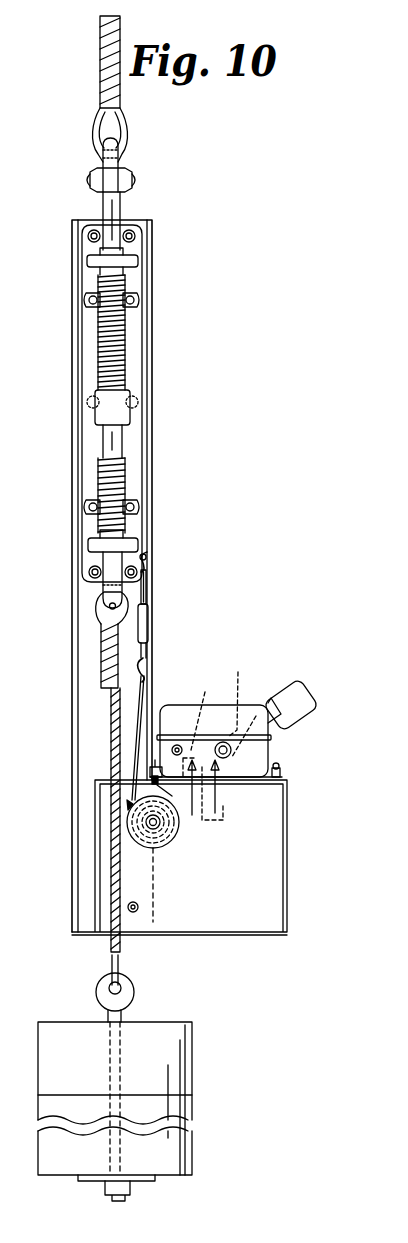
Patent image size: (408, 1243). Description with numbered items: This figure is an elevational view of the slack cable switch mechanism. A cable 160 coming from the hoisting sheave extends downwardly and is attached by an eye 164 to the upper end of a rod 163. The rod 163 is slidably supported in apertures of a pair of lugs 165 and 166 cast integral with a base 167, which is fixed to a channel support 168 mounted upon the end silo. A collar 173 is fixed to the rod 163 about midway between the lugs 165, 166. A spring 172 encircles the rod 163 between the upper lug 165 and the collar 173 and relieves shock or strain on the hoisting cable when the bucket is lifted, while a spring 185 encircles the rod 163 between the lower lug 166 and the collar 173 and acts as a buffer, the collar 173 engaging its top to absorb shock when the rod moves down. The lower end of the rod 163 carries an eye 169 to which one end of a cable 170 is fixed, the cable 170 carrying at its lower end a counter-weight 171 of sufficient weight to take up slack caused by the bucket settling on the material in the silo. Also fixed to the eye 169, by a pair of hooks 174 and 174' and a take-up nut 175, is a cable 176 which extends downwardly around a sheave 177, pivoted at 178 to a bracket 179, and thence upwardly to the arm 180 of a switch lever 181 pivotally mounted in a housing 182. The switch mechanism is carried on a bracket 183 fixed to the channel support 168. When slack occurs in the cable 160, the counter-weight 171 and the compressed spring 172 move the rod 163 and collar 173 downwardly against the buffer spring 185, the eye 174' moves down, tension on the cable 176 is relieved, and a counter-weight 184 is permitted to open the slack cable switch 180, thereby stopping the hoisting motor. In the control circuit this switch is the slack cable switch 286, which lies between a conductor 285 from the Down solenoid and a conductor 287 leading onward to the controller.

The cable 160 is at (105, 44).
The rod 163 is at (112, 208).
The eye 164 is at (125, 163).
The lug 165 is at (133, 262).
The lug 166 is at (92, 546).
The base 167 is at (132, 352).
The channel support 168 is at (152, 380).
The eye 169 is at (110, 590).
The cable 170 is at (113, 735).
The counter-weight 171 is at (162, 1043).
The spring 172 is at (125, 318).
The collar 173 is at (118, 417).
The hook 174 is at (179, 545).
The hook 174' is at (183, 574).
The take-up nut 175 is at (143, 625).
The cable 176 is at (142, 696).
The sheave 177 is at (172, 846).
The pivot 178 is at (179, 825).
The bracket 179 is at (128, 805).
The arm 180 is at (200, 714).
The switch lever 181 is at (239, 706).
The housing 182 is at (247, 711).
The bracket 183 is at (287, 800).
The counter-weight 184 is at (295, 703).
The spring 185 is at (123, 482).
The conductor 285 is at (222, 778).
The slack cable switch 286 is at (204, 820).
The conductor 287 is at (216, 803).